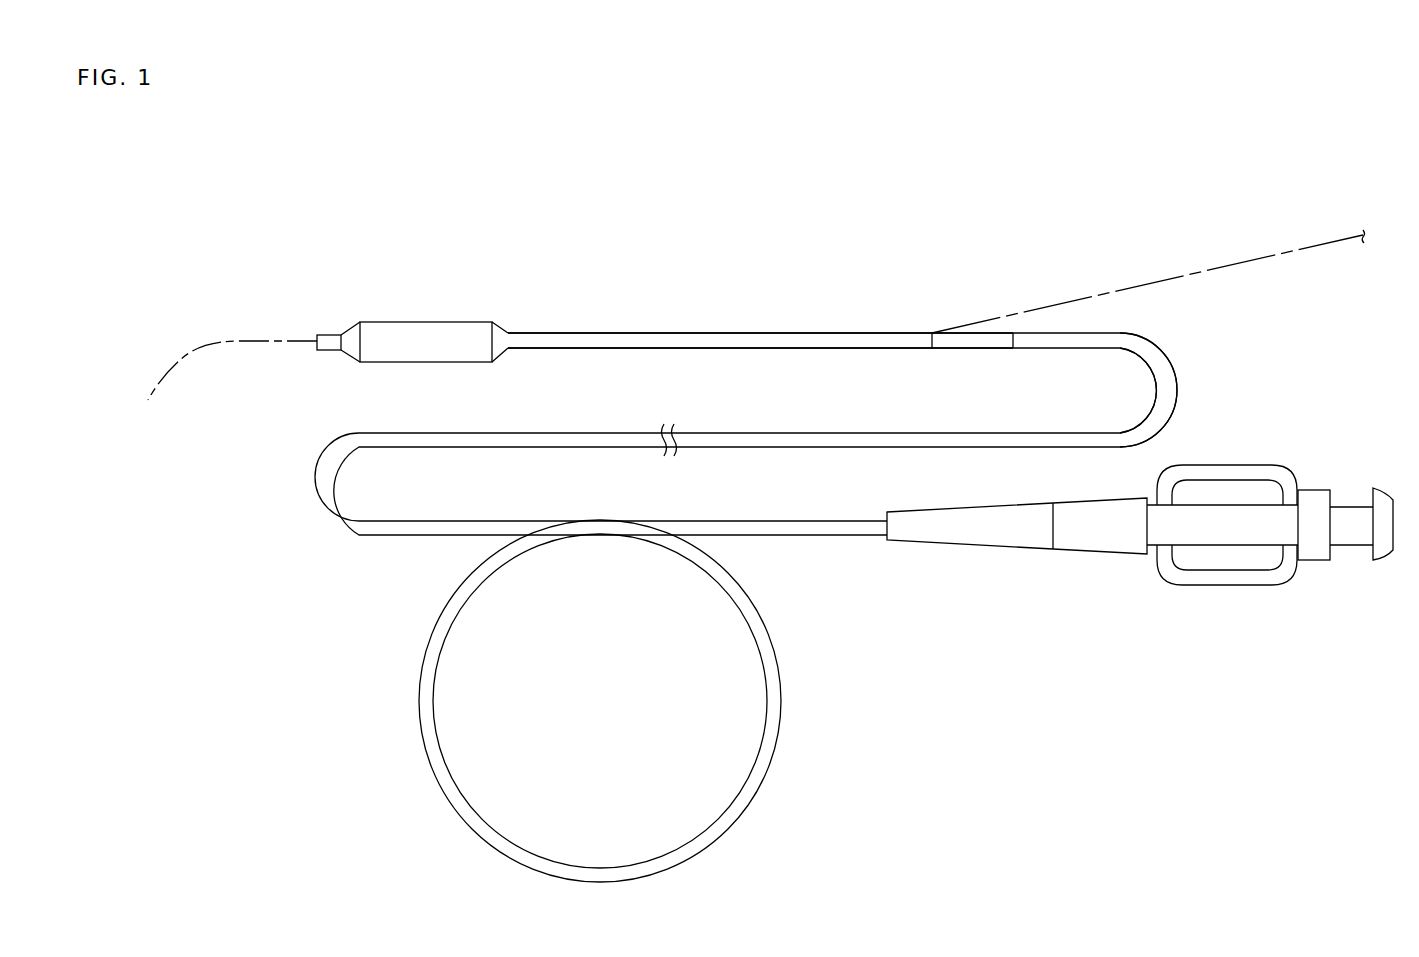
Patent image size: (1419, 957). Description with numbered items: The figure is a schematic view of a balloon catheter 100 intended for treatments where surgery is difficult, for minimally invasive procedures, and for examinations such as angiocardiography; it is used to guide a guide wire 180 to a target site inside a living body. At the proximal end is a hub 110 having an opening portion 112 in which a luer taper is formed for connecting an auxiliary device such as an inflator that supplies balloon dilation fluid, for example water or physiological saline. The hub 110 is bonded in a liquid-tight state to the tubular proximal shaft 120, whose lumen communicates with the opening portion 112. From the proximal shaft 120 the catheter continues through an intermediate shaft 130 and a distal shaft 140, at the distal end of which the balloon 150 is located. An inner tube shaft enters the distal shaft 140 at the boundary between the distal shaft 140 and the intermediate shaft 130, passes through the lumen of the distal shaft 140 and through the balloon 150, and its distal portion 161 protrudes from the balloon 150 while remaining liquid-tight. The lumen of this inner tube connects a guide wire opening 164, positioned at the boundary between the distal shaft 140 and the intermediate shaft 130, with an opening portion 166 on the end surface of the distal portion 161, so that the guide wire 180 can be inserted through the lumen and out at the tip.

The balloon catheter 100 is at (346, 222).
The hub 110 is at (1100, 552).
The opening portion 112 is at (1393, 535).
The proximal shaft 120 is at (1178, 388).
The intermediate shaft 130 is at (988, 348).
The distal shaft 140 is at (790, 352).
The balloon 150 is at (430, 322).
The distal portion 161 is at (327, 352).
The opening portion (guide wire opening) 164 is at (932, 333).
The opening portion 166 is at (310, 340).
The guide wire 180 is at (1185, 270).